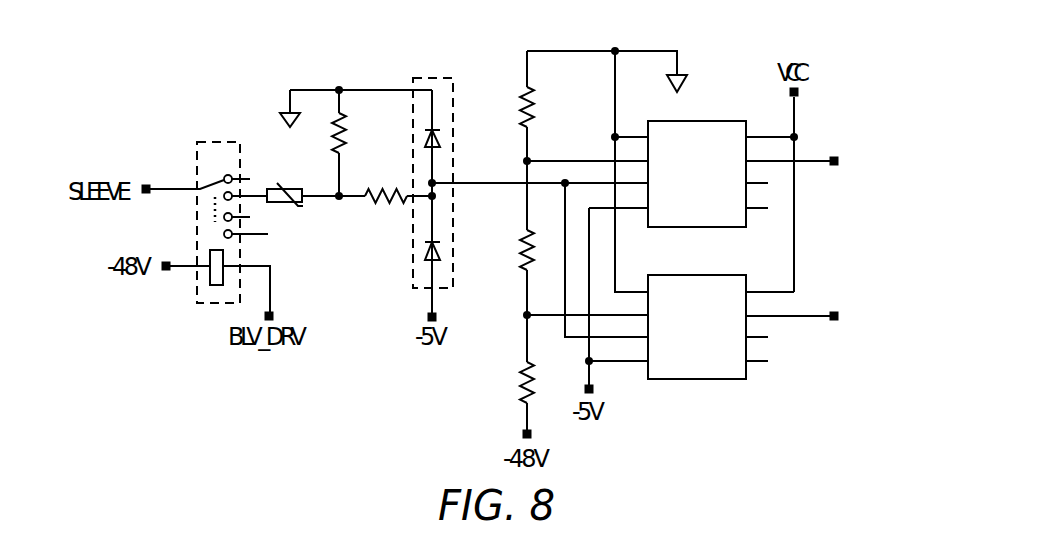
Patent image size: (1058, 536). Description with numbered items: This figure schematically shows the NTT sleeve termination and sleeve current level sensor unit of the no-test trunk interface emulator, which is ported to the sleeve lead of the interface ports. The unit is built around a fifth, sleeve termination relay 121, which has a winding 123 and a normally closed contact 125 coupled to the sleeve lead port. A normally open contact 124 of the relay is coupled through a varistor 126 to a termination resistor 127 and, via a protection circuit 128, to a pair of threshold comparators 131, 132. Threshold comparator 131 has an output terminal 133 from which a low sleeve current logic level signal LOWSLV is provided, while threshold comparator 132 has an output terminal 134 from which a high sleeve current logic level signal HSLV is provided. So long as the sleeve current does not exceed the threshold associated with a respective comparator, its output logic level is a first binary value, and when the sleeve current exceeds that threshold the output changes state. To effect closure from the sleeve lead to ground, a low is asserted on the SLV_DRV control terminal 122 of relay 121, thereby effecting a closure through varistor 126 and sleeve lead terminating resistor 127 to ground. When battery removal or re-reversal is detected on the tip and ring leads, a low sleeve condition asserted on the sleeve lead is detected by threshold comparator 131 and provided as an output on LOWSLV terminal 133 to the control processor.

The sleeve termination relay 121 is at (189, 210).
The SLV_DRV control terminal 122 is at (273, 313).
The winding 123 is at (207, 282).
The normally open contact 124 is at (215, 222).
The normally closed contact 125 is at (228, 175).
The varistor 126 is at (303, 202).
The termination resistor 127 is at (342, 140).
The protection circuit 128 is at (425, 78).
The threshold comparator 131 is at (723, 120).
The threshold comparator 132 is at (710, 381).
The output terminal 133 is at (835, 153).
The output terminal 134 is at (835, 310).